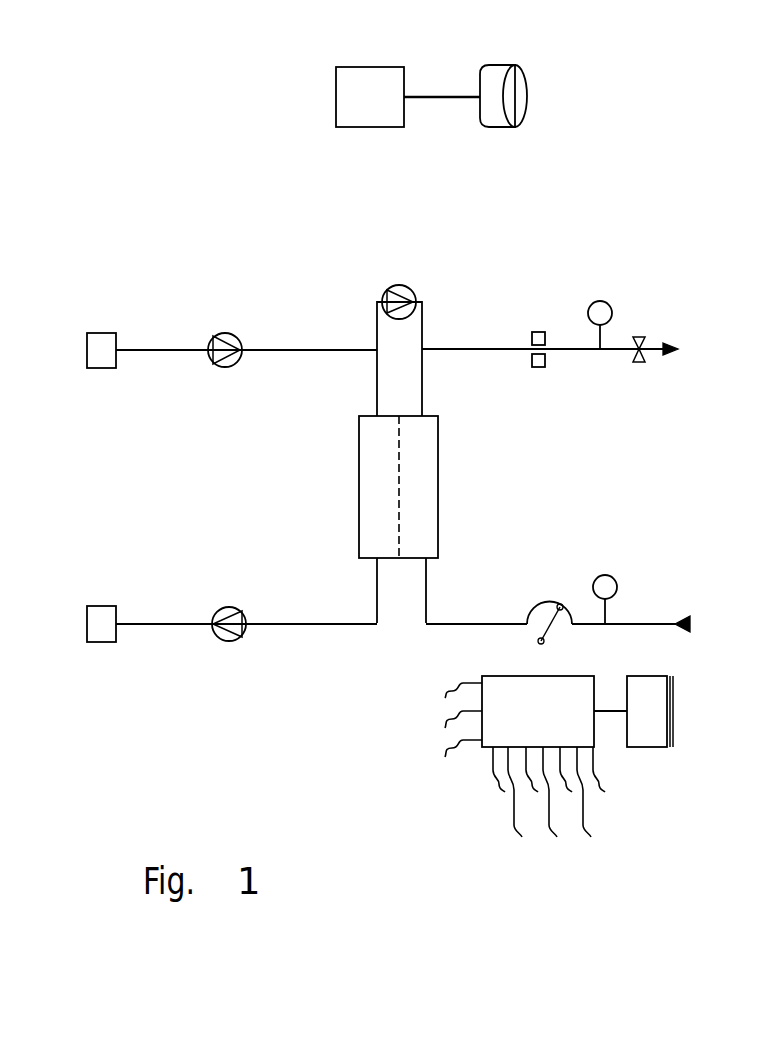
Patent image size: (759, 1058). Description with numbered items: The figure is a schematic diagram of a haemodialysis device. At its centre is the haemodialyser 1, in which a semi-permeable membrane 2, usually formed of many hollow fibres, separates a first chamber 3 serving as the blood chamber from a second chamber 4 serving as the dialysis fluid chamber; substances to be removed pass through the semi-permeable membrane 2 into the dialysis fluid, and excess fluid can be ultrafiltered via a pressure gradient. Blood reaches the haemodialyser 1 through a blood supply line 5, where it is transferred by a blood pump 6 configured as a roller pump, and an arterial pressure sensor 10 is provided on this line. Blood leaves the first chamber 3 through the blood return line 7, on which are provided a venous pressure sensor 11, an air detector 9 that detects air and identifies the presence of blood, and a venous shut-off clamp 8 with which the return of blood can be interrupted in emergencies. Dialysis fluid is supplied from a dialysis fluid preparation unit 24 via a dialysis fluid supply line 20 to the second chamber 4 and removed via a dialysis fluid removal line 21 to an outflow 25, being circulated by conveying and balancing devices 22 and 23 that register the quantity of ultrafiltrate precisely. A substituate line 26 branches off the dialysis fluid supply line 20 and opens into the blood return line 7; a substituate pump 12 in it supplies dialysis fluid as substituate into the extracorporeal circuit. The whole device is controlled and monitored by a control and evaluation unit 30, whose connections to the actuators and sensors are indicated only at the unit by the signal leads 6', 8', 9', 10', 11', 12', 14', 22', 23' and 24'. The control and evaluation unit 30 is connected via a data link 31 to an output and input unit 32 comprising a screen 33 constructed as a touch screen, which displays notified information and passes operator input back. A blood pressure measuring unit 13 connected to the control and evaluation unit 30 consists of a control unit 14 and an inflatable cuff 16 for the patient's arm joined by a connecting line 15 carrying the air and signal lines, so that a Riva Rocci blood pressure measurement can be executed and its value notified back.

The haemodialyser 1 is at (358, 440).
The semi-permeable membrane 2 is at (400, 537).
The first chamber 3 is at (427, 483).
The second chamber 4 is at (378, 510).
The blood supply line 5 is at (657, 622).
The blood pump 6 is at (563, 633).
The blood return line 7 is at (483, 347).
The venous shut-off clamp 8 is at (665, 372).
The air detector 9 is at (561, 379).
The arterial pressure sensor 10 is at (616, 564).
The venous pressure sensor 11 is at (634, 298).
The substituate pump 12 is at (388, 268).
The blood pressure measuring unit 13 is at (300, 57).
The control unit 14 is at (358, 127).
The connecting line 15 is at (438, 93).
The inflatable cuff 16 is at (490, 128).
The dialysis fluid supply line 20 is at (288, 348).
The dialysis fluid removal line 21 is at (273, 625).
The conveying and balancing device 22 is at (241, 310).
The conveying and balancing device 23 is at (217, 590).
The dialysis fluid preparation unit 24 is at (86, 323).
The outflow 25 is at (105, 643).
The substituate line 26 is at (423, 323).
The control and evaluation unit 30 is at (538, 711).
The data link 31 is at (598, 715).
The output and input unit 32 is at (647, 711).
The screen 33 is at (672, 692).
The signal lead 6' is at (500, 786).
The signal lead 8' is at (525, 807).
The signal lead 9' is at (537, 786).
The signal lead 10' is at (566, 807).
The signal lead 11' is at (571, 786).
The signal lead 12' is at (602, 807).
The signal lead 14' is at (613, 786).
The signal lead 22' is at (451, 705).
The signal lead 23' is at (451, 734).
The signal lead 24' is at (451, 763).